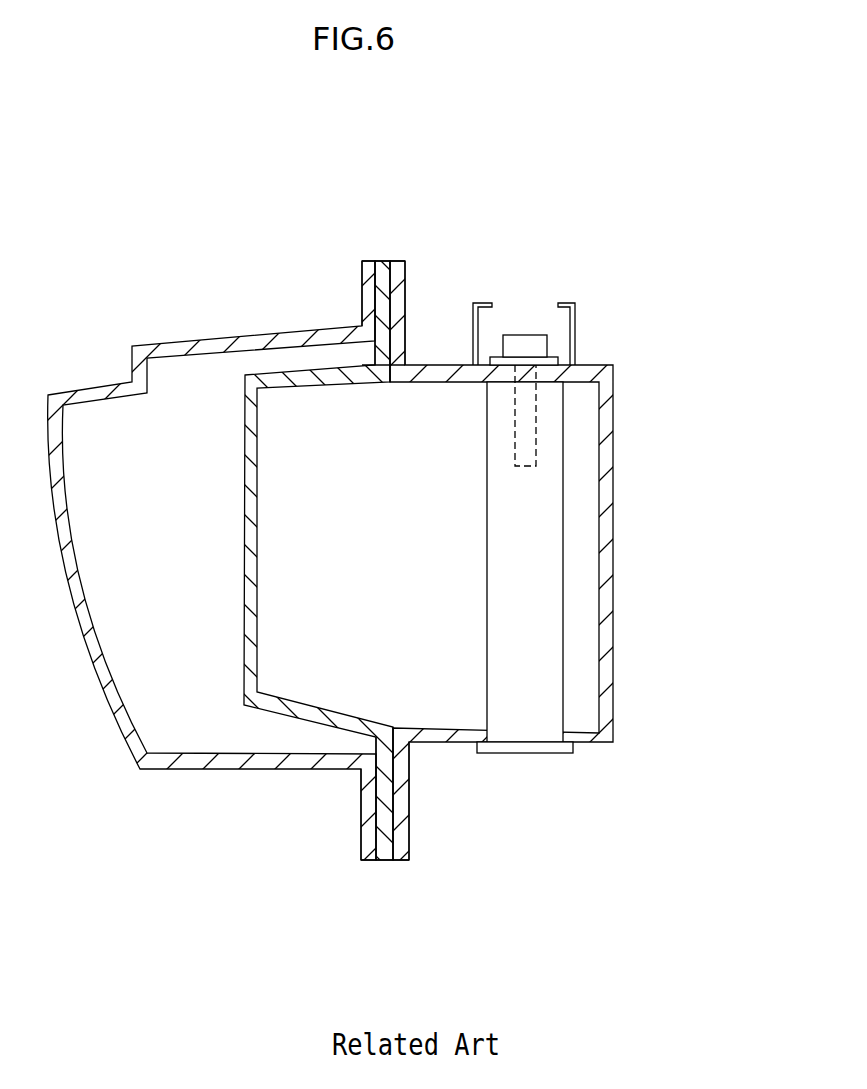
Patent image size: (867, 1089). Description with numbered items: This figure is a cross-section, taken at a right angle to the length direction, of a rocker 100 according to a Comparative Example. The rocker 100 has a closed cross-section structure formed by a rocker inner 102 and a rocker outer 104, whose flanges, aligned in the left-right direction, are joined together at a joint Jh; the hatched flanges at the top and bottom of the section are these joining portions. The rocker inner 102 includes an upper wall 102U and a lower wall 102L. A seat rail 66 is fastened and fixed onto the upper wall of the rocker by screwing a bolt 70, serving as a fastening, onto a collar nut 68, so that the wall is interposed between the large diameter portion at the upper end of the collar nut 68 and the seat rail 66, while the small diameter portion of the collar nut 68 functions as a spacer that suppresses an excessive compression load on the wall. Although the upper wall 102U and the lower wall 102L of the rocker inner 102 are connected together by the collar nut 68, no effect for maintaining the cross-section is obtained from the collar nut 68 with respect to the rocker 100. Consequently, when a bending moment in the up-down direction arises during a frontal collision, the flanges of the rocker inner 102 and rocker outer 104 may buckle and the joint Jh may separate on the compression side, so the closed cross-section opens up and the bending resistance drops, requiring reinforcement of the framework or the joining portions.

The rocker 100 is at (412, 232).
The rocker inner 102 is at (608, 633).
The upper wall 102U is at (575, 378).
The lower wall 102L is at (430, 737).
The rocker outer 104 is at (252, 602).
The collar nut 68 is at (495, 560).
The bolt 70 is at (514, 342).
The seat rail 66 is at (572, 298).
The joint Jh is at (412, 278).